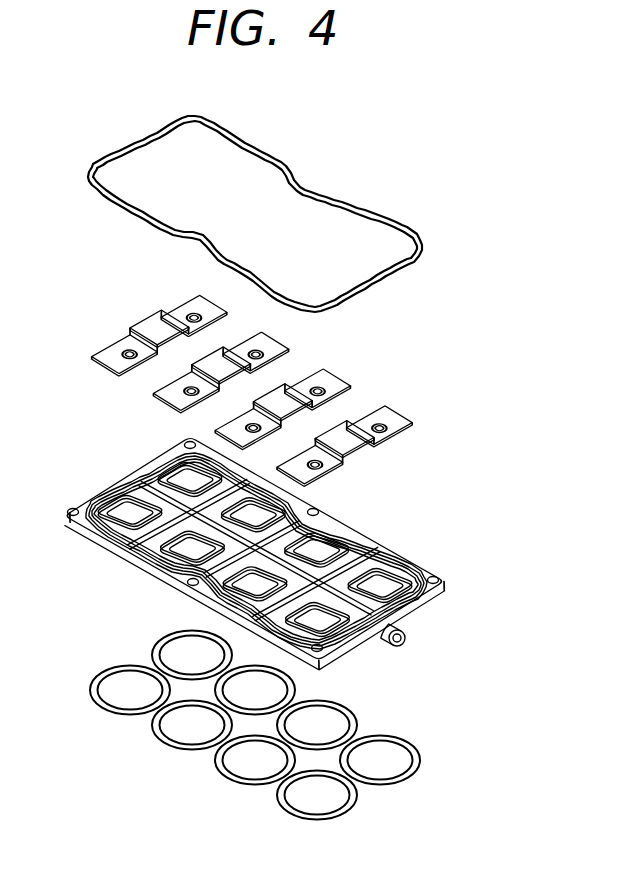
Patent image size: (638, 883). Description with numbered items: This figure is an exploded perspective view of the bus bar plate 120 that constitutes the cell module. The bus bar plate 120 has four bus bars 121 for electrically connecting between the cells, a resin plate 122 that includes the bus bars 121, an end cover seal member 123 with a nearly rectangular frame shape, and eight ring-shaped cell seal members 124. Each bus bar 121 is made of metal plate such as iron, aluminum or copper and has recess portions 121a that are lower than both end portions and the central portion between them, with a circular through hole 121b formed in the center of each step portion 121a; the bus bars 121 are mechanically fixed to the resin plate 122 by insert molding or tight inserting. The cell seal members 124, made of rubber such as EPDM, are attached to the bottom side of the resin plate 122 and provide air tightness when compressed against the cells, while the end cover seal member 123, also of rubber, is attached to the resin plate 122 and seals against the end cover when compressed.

The bus bar plate 120 is at (332, 136).
The bus bar 121 is at (291, 395).
The recess portion 121a is at (395, 432).
The circular through hole 121b is at (352, 420).
The resin plate 122 is at (437, 593).
The end cover seal member 123 is at (402, 223).
The cell seal member 124 is at (397, 737).